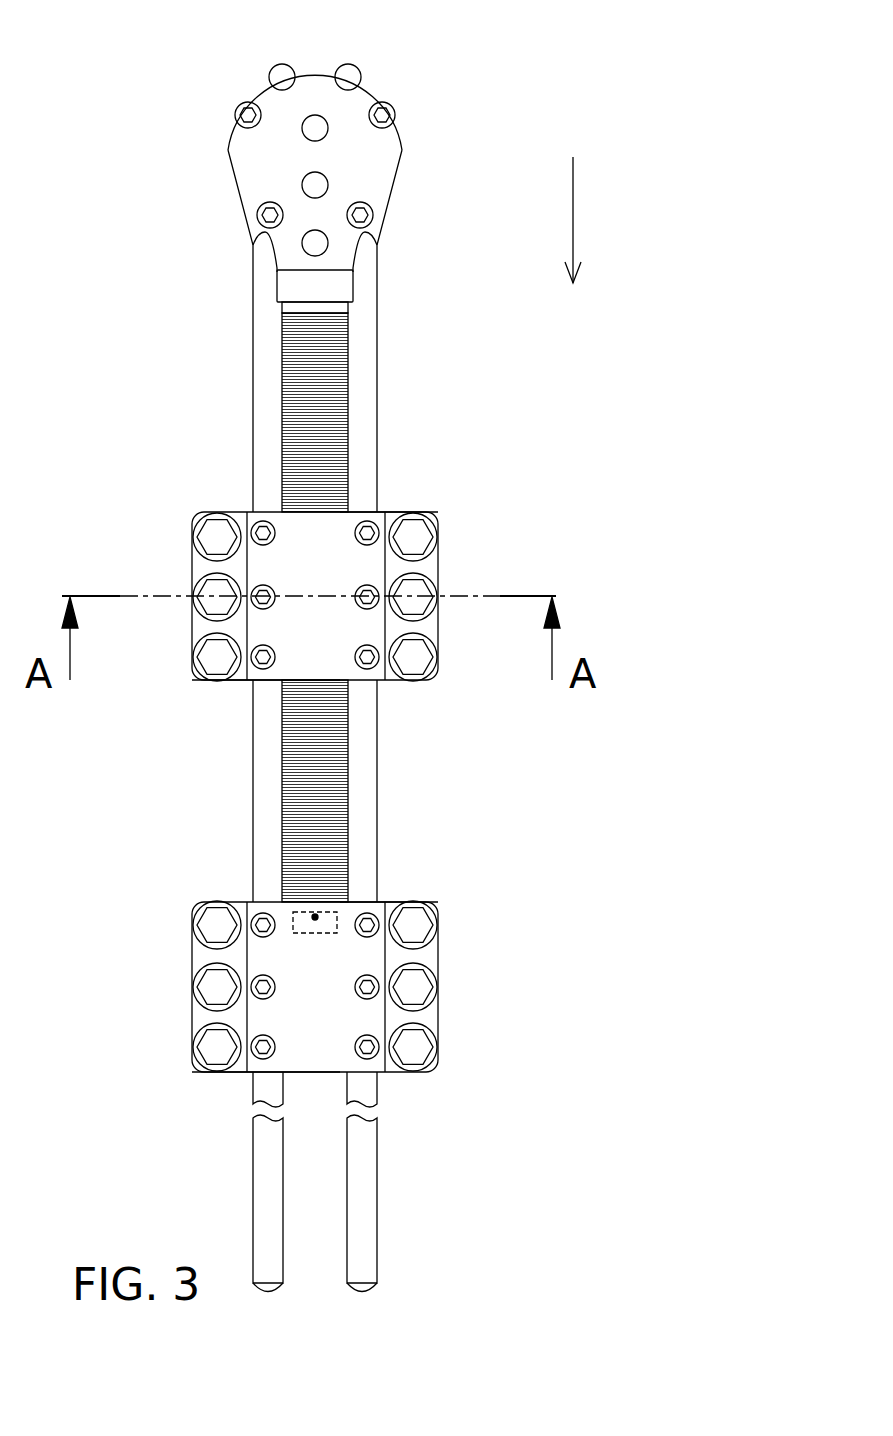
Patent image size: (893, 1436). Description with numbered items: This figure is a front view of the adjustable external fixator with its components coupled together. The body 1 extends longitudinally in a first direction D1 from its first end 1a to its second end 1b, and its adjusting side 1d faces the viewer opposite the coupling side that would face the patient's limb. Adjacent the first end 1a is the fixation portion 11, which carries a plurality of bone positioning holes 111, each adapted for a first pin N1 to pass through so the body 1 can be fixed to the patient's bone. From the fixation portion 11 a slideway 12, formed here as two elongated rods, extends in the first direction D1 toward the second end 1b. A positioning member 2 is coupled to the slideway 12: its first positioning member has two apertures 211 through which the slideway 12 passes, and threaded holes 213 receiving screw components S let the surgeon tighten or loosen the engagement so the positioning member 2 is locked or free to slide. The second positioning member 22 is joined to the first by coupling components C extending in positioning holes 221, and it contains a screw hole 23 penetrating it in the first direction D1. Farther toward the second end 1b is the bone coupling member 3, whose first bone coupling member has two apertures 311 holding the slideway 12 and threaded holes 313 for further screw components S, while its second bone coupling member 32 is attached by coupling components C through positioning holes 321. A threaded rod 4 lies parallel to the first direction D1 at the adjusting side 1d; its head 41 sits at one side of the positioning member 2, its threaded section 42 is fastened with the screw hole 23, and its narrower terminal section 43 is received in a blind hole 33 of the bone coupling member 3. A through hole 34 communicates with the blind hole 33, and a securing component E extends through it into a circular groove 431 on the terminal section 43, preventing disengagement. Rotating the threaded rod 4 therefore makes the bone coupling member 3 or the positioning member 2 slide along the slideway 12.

The body 1 is at (367, 650).
The first end 1a is at (320, 42).
The second end 1b is at (370, 1291).
The adjusting side 1d is at (300, 223).
The fixation portion 11 is at (368, 95).
The bone positioning holes 111 is at (394, 148).
The first pin N1 is at (392, 112).
The slideway 12 is at (372, 512).
The positioning member 2 is at (354, 606).
The apertures 211 is at (423, 487).
The threaded holes 213 is at (372, 587).
The screw components S is at (427, 530).
The positioning holes 221 is at (378, 623).
The coupling components C is at (365, 665).
The second positioning member 22 is at (283, 668).
The screw hole 23 is at (308, 512).
The bone coupling member 3 is at (317, 982).
The apertures 311 is at (365, 902).
The threaded holes 313 is at (430, 920).
The positioning holes 321 is at (365, 1052).
The second bone coupling member 32 is at (305, 1058).
The blind hole 33 is at (290, 912).
The through hole 34 is at (196, 926).
The threaded rod 4 is at (279, 601).
The head 41 is at (345, 287).
The threaded section 42 is at (256, 471).
The terminal section 43 is at (218, 878).
The circular groove 431 is at (196, 926).
The securing component E is at (312, 918).
The first direction D1 is at (575, 239).